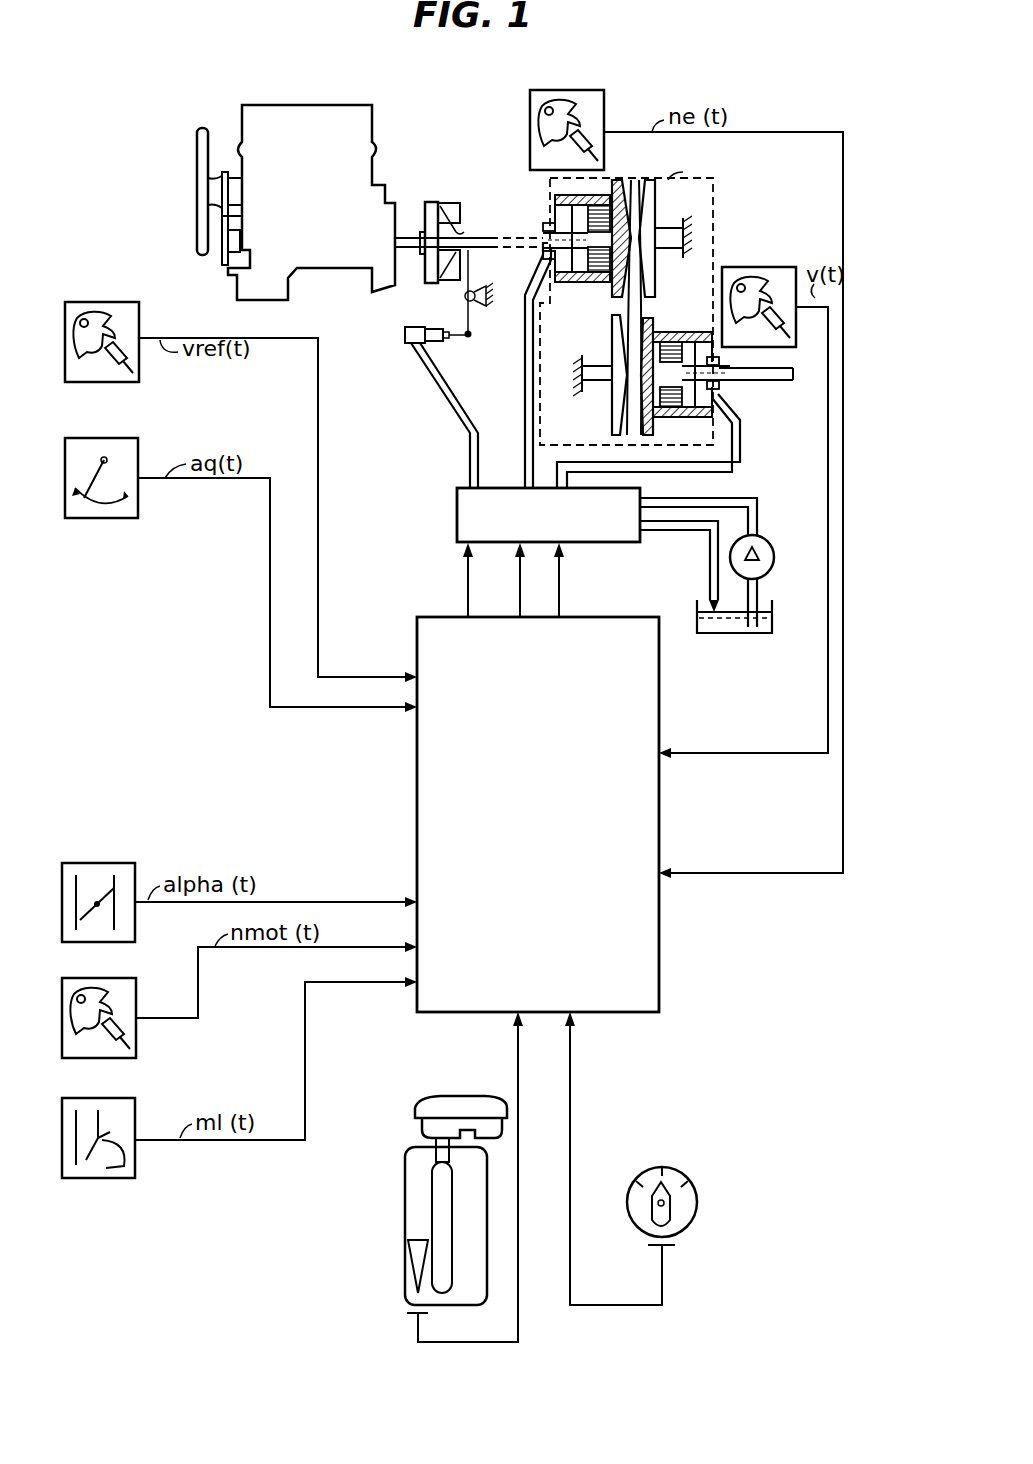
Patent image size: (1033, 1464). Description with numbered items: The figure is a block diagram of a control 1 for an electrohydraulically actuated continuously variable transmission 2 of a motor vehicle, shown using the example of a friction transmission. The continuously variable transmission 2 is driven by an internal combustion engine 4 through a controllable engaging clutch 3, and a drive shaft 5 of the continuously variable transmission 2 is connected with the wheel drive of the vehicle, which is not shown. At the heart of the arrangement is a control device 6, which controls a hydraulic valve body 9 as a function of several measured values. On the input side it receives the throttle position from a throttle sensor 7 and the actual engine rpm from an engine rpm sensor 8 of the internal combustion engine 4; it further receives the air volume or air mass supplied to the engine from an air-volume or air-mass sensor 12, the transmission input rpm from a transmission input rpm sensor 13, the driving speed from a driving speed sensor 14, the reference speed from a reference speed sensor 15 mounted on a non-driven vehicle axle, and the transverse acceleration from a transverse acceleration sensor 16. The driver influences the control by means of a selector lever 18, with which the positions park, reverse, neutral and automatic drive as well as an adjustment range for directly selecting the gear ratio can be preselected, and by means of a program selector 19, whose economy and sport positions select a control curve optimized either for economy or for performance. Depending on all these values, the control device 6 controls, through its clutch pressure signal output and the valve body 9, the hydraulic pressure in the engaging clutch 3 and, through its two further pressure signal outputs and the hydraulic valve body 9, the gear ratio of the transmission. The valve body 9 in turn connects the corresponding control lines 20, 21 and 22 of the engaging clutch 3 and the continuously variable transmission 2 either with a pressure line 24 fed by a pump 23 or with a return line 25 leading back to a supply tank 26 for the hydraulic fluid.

The control 1 is at (682, 942).
The continuously variable transmission 2 is at (720, 218).
The engaging clutch 3 is at (453, 186).
The internal combustion engine 4 is at (373, 164).
The drive shaft 5 is at (762, 381).
The control device 6 is at (618, 617).
The throttle sensor 7 is at (90, 863).
The engine rpm sensor 8 is at (90, 978).
The hydraulic valve body 9 is at (457, 512).
The air-volume or air-mass sensor 12 is at (92, 1098).
The transmission input rpm sensor 13 is at (556, 90).
The driving speed sensor 14 is at (732, 267).
The reference speed sensor 15 is at (92, 302).
The transverse acceleration sensor 16 is at (92, 438).
The selector lever 18 is at (405, 1215).
The program selector 19 is at (630, 1226).
The control line 20 is at (446, 392).
The control line 21 is at (522, 360).
The control line 22 is at (672, 476).
The pump 23 is at (768, 538).
The pressure line 24 is at (750, 498).
The return line 25 is at (706, 574).
The supply tank 26 is at (727, 633).